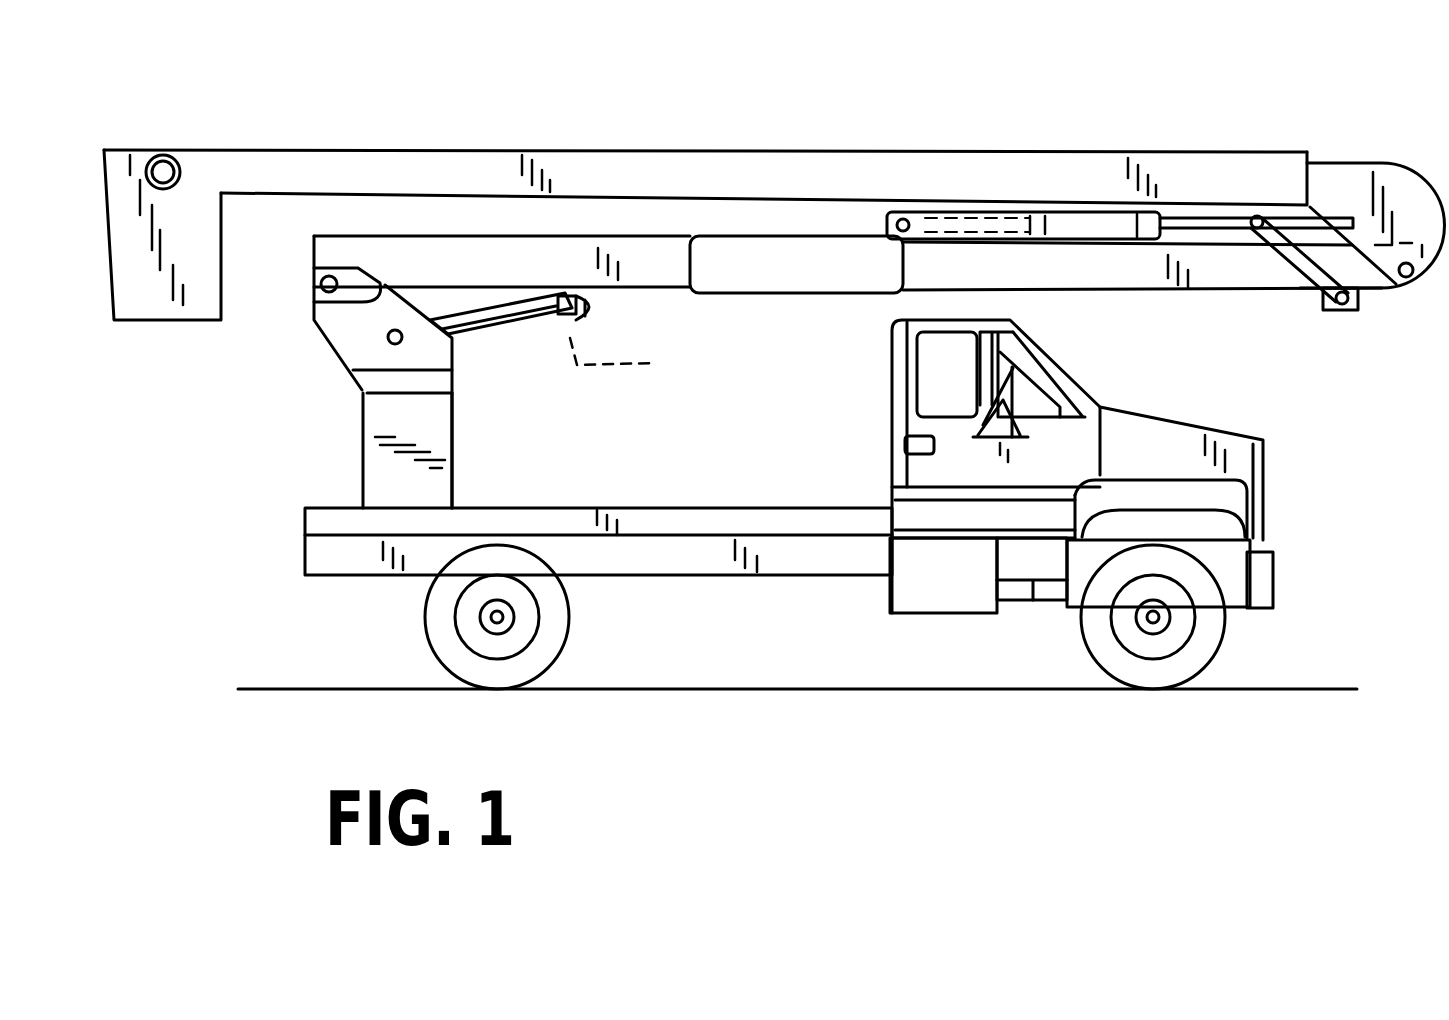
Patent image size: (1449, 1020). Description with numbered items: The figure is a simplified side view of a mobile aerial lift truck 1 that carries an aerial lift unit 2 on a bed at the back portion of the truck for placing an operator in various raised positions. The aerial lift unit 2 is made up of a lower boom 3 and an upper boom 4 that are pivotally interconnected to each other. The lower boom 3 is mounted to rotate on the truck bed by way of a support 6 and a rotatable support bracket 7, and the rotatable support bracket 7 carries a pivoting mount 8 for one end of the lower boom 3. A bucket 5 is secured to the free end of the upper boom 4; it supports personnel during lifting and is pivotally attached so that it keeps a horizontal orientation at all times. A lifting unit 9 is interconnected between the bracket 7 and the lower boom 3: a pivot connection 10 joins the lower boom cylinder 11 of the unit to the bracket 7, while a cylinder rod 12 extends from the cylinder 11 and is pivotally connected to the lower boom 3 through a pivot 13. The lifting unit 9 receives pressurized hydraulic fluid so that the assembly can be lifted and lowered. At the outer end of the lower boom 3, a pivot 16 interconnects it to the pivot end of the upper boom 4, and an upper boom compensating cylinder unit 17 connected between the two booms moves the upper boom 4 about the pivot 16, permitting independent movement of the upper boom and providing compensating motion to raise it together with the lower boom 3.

The mobile aerial lift truck 1 is at (1195, 403).
The aerial lift unit 2 is at (722, 152).
The lower boom 3 is at (778, 273).
The upper boom 4 is at (985, 165).
The bucket 5 is at (209, 259).
The support 6 is at (346, 440).
The rotatable support bracket 7 is at (310, 320).
The pivoting mount 8 is at (320, 285).
The lifting unit 9 is at (502, 334).
The pivot connection 10 is at (387, 342).
The lower boom cylinder 11 is at (457, 340).
The cylinder rod 12 is at (639, 358).
The pivot 13 is at (590, 302).
The pivot 16 is at (1408, 278).
The upper boom compensating cylinder unit 17 is at (1198, 214).